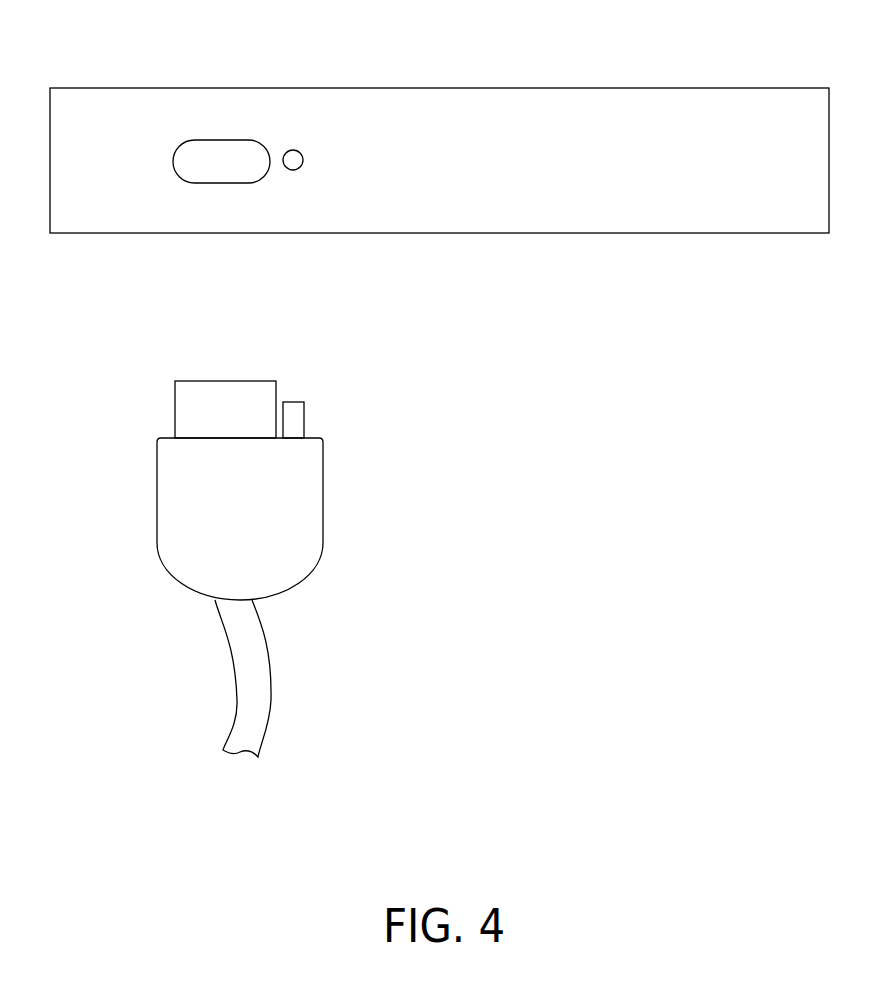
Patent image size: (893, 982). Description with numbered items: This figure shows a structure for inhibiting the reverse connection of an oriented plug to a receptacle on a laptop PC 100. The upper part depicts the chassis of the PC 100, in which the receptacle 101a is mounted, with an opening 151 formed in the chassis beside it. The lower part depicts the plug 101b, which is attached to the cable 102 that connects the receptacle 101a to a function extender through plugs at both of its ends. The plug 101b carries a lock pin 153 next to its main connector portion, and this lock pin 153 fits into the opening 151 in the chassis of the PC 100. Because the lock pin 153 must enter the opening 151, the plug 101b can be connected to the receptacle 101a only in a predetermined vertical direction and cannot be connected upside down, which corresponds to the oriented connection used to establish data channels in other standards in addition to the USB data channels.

The laptop PC 100 is at (271, 88).
The receptacle 101a is at (176, 158).
The opening 151 is at (298, 151).
The lock pin 153 is at (305, 402).
The plug 101b is at (323, 502).
The cable 102 is at (272, 705).